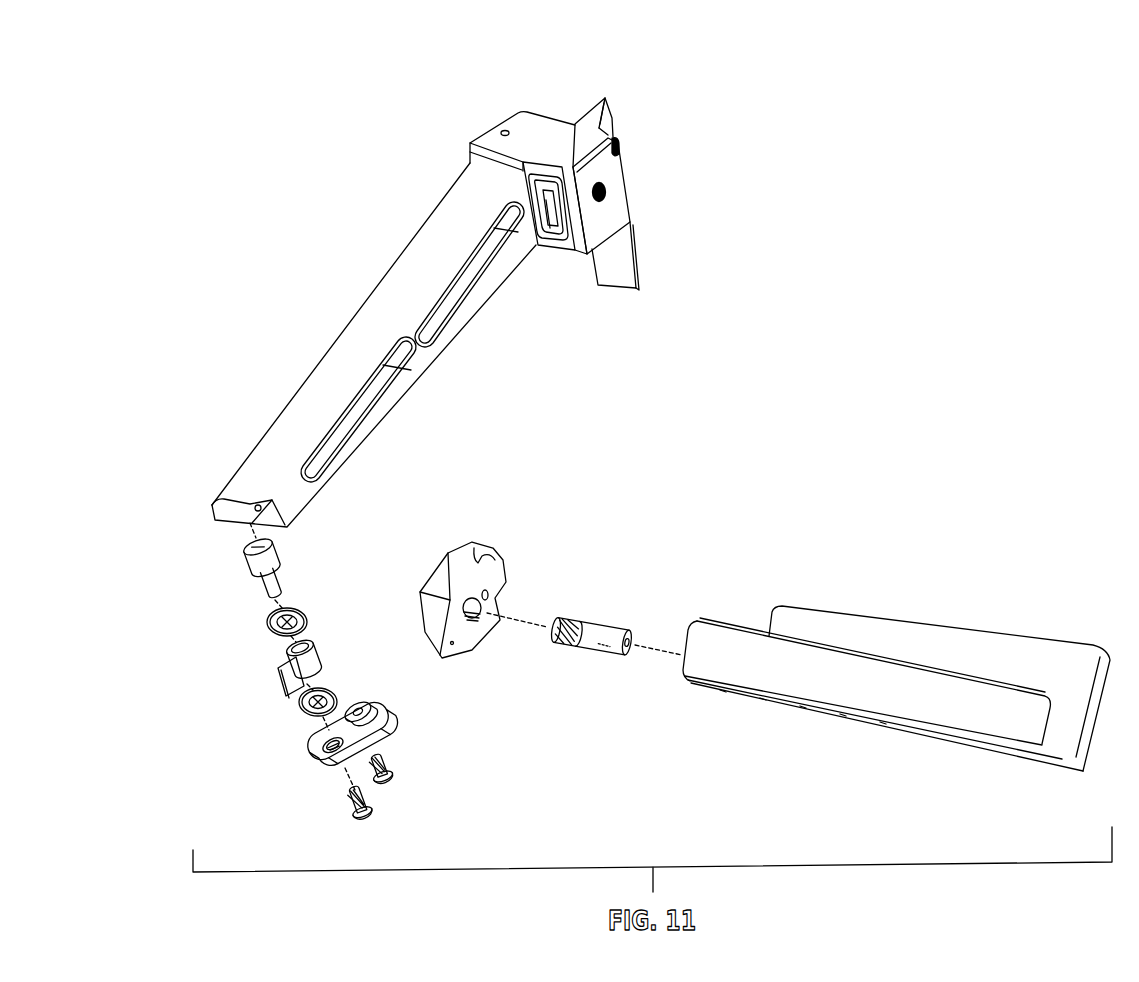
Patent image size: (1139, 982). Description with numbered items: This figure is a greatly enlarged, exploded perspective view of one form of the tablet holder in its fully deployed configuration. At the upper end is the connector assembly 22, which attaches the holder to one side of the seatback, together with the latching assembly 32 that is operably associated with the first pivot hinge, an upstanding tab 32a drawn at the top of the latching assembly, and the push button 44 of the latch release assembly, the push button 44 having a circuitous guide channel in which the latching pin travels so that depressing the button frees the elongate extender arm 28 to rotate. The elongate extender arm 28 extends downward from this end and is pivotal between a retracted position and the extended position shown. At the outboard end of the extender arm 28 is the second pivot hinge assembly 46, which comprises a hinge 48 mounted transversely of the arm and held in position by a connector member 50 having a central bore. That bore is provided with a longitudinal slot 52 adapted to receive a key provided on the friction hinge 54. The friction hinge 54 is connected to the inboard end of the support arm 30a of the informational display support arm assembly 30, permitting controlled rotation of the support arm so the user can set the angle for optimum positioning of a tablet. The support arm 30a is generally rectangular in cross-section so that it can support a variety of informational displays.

The connector assembly 22 is at (633, 247).
The elongate extender arm 28 is at (367, 303).
The informational display support arm assembly 30 is at (498, 122).
The support arm 30a is at (865, 727).
The latching assembly 32 is at (634, 200).
The bracket tab 32a is at (583, 137).
The push button 44 is at (552, 213).
The second pivot hinge assembly 46 is at (302, 558).
The hinge 48 is at (278, 687).
The connector member 50 is at (507, 563).
The longitudinal slot 52 is at (480, 620).
The friction hinge 54 is at (602, 650).